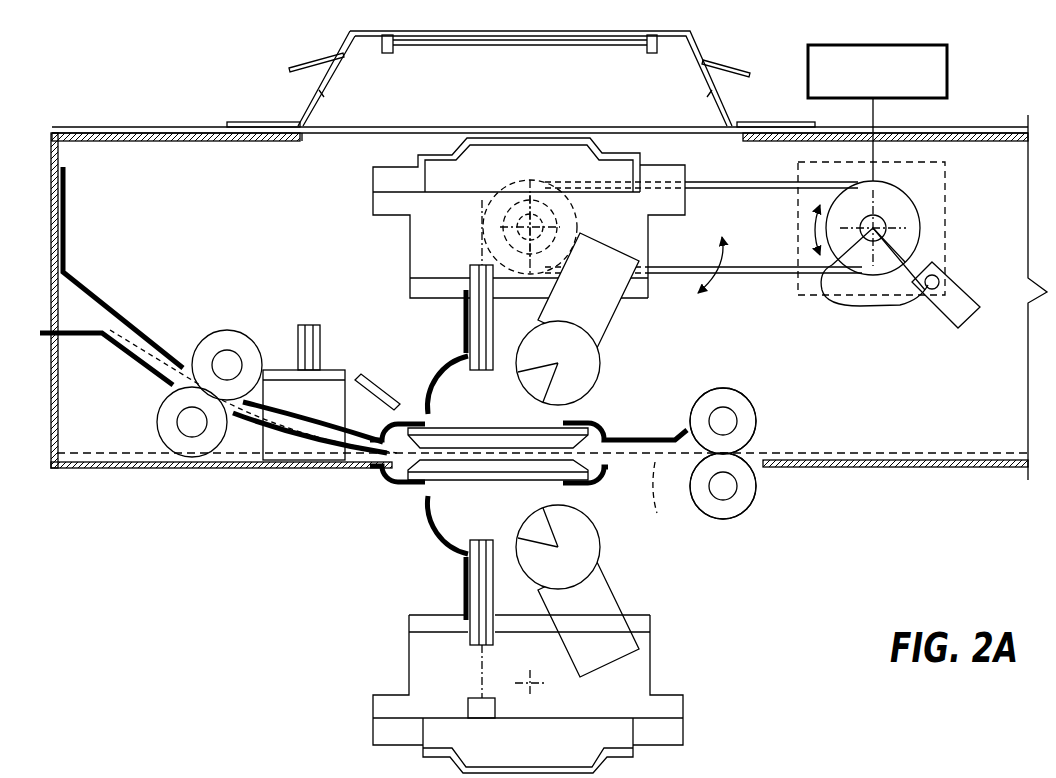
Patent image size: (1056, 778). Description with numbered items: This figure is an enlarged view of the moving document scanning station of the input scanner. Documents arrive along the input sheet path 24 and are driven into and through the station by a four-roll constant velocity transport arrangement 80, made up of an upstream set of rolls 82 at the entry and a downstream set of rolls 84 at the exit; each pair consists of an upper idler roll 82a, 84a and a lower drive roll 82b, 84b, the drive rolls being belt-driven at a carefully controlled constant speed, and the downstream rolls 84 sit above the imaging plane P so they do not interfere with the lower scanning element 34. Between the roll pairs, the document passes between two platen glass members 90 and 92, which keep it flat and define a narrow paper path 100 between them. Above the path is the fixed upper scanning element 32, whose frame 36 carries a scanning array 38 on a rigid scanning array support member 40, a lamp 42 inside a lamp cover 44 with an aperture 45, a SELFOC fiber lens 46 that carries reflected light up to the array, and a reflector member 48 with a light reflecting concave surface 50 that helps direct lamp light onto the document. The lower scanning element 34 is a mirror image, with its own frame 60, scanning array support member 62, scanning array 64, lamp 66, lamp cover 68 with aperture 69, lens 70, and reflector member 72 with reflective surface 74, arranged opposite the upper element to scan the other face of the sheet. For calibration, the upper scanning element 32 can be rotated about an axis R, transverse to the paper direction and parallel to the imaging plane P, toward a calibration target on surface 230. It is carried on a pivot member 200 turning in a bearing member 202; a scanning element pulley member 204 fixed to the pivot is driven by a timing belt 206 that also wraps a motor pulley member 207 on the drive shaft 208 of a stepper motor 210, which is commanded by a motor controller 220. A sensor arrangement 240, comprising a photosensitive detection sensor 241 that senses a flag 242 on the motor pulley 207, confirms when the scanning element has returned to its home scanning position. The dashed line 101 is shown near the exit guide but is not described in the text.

The input sheet path 24 is at (783, 452).
The upper scanning element 32 is at (662, 307).
The lower scanning element 34 is at (692, 557).
The upper scanning element frame 36 is at (648, 246).
The scanning array 38 is at (472, 202).
The scanning array support member 40 is at (690, 170).
The lamp 42 is at (616, 360).
The lamp cover 44 is at (590, 393).
The aperture 45 is at (523, 373).
The lens 46 is at (495, 320).
The reflector member 48 is at (440, 360).
The light reflecting concave surface 50 is at (437, 393).
The frame 60 is at (652, 681).
The scanning array support member 62 is at (388, 738).
The scanning array 64 is at (472, 697).
The lamp 66 is at (623, 577).
The lamp cover 68 is at (605, 526).
The aperture 69 is at (545, 520).
The lens 70 is at (475, 590).
The reflector member 72 is at (432, 526).
The reflective surface 74 is at (455, 540).
The Constant Velocity Transport arrangement 80 is at (187, 321).
The upstream set of rolls 82 is at (752, 405).
The upper idler roll 82a is at (728, 387).
The lower drive roll 82b is at (742, 510).
The downstream set of rolls 84 is at (197, 350).
The upper idler roll 84a is at (222, 330).
The lower drive roll 84b is at (158, 427).
The platen glass member 90 is at (530, 440).
The platen glass member 92 is at (495, 485).
The paper path 100 is at (640, 447).
The sensor line 101 is at (663, 501).
The pivot member 200 is at (540, 222).
The bearing member 202 is at (515, 205).
The scanning element pulley member 204 is at (500, 187).
The timing belt 206 is at (787, 183).
The motor pulley member 207 is at (918, 243).
The drive shaft 208 is at (893, 268).
The stepper motor 210 is at (947, 227).
The motor controller 220 is at (950, 70).
The surface 230 is at (373, 380).
The sensor arrangement 240 is at (921, 312).
The photosensitive detection sensor 241 is at (970, 310).
The flag 242 is at (853, 308).
The imaging plane P is at (970, 445).
The axis R is at (542, 222).